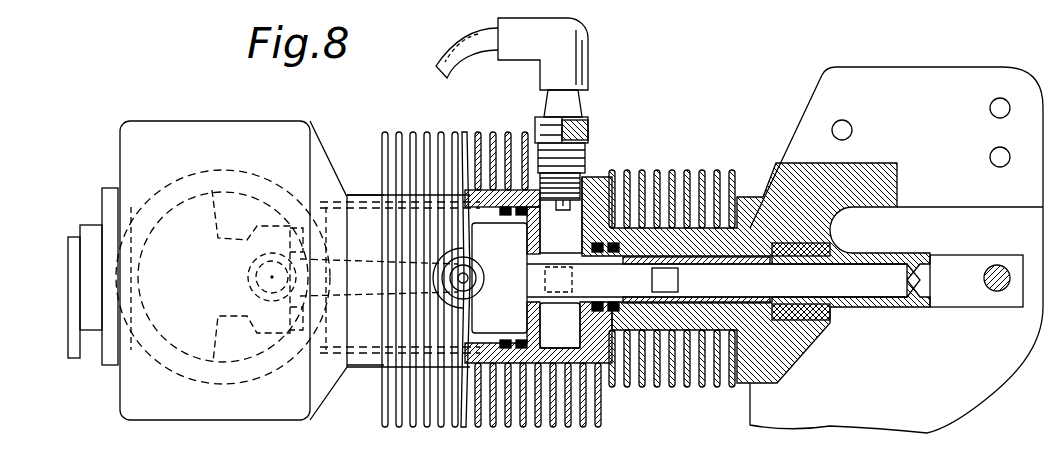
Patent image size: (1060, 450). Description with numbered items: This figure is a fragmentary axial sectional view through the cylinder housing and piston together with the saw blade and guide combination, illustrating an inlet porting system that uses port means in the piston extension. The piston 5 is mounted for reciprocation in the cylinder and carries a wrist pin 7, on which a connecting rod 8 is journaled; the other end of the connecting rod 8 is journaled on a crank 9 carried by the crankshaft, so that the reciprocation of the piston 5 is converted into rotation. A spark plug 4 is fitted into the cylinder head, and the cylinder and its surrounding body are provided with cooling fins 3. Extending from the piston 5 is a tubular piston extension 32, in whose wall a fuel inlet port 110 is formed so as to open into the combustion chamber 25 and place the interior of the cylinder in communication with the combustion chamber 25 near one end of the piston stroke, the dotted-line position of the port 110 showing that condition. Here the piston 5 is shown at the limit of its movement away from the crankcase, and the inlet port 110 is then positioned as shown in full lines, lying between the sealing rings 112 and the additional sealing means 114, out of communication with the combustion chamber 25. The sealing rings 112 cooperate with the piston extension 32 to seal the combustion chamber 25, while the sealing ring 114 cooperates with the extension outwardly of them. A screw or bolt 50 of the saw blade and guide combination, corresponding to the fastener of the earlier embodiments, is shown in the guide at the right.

The crank 9 is at (256, 277).
The connecting rod 8 is at (361, 272).
The piston 5 is at (499, 277).
The wrist pin 7 is at (478, 279).
The spark plug 4 is at (587, 147).
The combustion chamber 25 is at (572, 222).
The cooling fins 3 is at (710, 172).
The fuel inlet port 110 is at (652, 279).
The piston extension 32 is at (700, 262).
The additional sealing ring 114 is at (778, 256).
The sealing rings 112 is at (617, 310).
The screw or bolt 50 is at (995, 292).